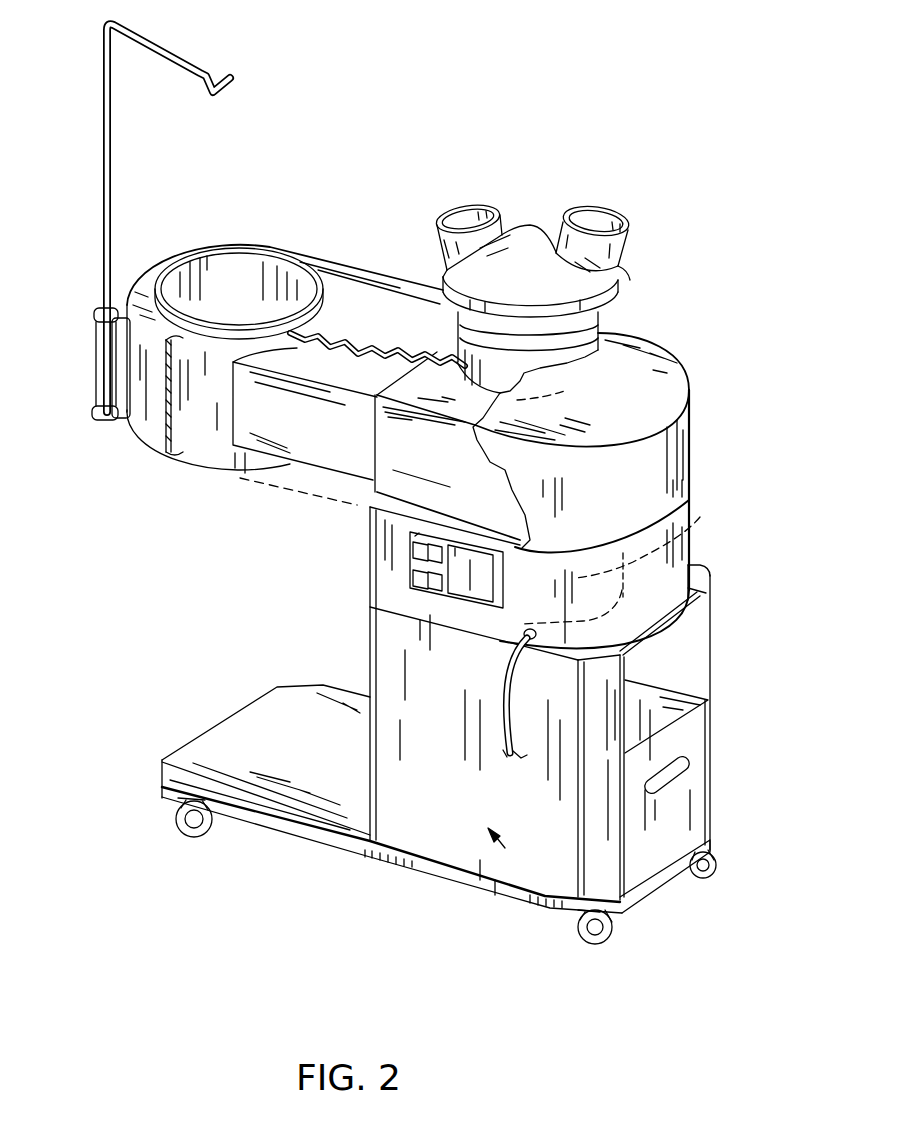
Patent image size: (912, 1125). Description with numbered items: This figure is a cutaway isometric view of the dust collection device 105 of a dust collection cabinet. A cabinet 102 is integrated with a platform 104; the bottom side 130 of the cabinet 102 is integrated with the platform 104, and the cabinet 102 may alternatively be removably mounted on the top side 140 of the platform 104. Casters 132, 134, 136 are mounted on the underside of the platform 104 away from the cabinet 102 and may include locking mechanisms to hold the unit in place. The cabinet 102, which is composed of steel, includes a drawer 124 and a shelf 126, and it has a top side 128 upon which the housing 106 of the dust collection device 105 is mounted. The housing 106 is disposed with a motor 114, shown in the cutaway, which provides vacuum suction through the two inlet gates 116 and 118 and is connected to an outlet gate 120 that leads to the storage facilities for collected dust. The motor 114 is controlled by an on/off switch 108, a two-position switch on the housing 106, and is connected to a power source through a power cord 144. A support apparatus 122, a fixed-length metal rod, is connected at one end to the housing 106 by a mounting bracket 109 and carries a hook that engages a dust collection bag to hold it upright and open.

The cabinet 102 is at (597, 863).
The platform 104 is at (323, 836).
The dust collection device 105 is at (658, 320).
The housing 106 is at (667, 447).
The on/off switch 108 is at (410, 558).
The mounting bracket 109 is at (98, 313).
The motor 114 is at (700, 517).
The inlet gate 116 is at (606, 252).
The inlet gate 118 is at (445, 255).
The outlet gate 120 is at (349, 447).
The support apparatus 122 is at (105, 168).
The drawer 124 is at (700, 730).
The shelf 126 is at (660, 703).
The top side 128 is at (698, 572).
The bottom side 130 is at (505, 848).
The caster 132 is at (185, 837).
The caster 134 is at (612, 940).
The caster 136 is at (713, 873).
The top side of platform 140 is at (162, 760).
The power cord 144 is at (507, 703).